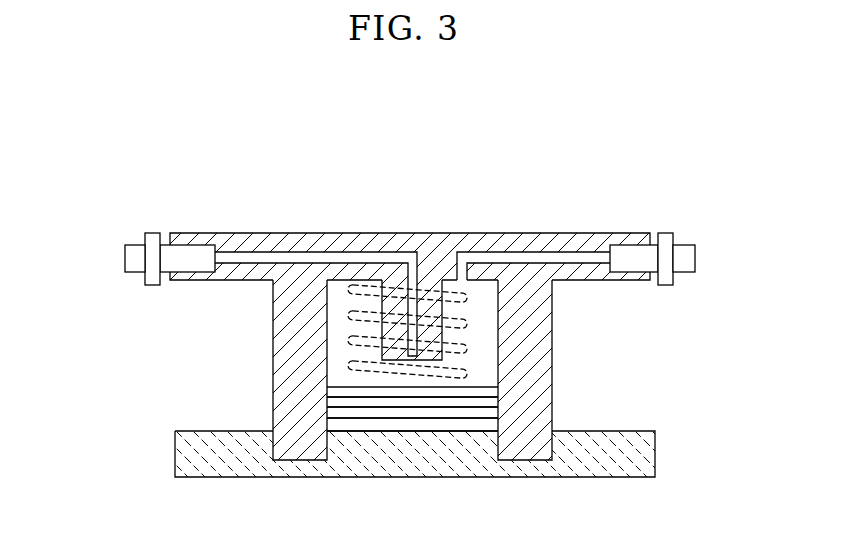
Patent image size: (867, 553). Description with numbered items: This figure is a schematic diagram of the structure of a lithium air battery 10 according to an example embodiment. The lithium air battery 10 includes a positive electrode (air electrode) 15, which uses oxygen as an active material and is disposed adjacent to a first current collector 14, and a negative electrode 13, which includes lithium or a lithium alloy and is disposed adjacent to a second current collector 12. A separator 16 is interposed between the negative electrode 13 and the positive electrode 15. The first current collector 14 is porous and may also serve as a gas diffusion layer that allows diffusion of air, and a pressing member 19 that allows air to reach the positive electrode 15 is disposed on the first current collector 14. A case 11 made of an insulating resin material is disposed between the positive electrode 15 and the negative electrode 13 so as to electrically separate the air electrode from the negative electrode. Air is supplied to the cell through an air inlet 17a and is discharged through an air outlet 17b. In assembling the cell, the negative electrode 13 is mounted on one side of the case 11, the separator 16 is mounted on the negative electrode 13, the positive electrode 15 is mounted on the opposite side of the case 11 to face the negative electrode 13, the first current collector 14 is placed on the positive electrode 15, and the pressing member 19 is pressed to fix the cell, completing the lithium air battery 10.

The lithium air battery 10 is at (183, 178).
The case 11 is at (275, 322).
The second current collector 12 is at (655, 457).
The negative electrode 13 is at (498, 425).
The first current collector 14 is at (498, 386).
The positive electrode (air electrode) 15 is at (498, 397).
The separator 16 is at (498, 407).
The air inlet 17a is at (106, 258).
The air outlet 17b is at (700, 258).
The pressing member 19 is at (467, 326).